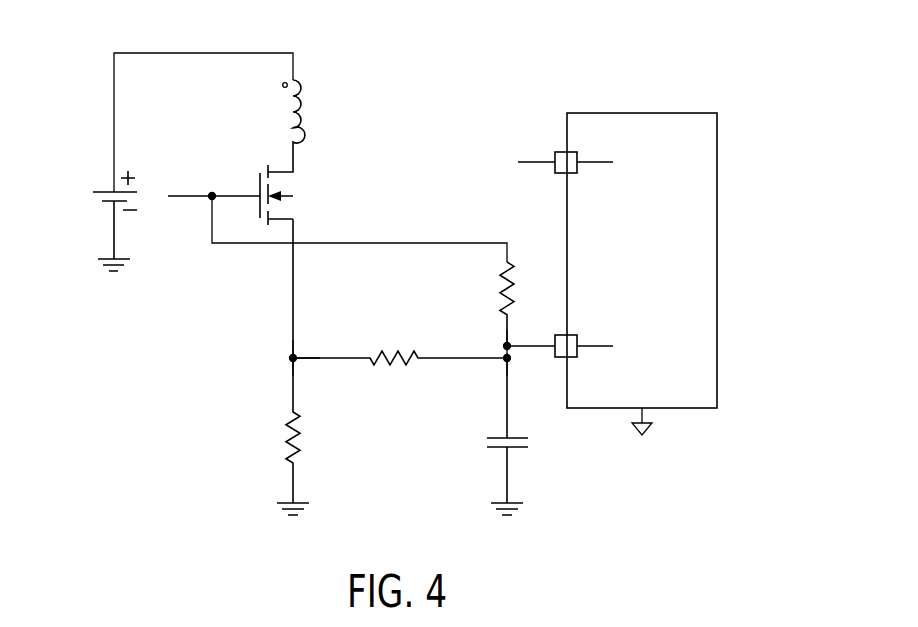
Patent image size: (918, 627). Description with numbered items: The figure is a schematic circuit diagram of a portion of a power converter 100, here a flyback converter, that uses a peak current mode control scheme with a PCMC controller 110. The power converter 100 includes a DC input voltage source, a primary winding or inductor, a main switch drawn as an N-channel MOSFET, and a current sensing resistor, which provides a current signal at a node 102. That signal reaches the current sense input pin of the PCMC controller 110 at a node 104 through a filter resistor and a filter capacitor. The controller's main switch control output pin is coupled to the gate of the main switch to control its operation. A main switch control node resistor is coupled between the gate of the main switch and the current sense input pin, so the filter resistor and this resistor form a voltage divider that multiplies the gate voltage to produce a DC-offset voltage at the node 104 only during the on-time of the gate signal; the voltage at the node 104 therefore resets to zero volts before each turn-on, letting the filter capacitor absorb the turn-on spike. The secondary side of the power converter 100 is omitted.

The power converter 100 is at (724, 30).
The node 102 is at (290, 358).
The node 104 is at (504, 346).
The PCMC controller 110 is at (717, 183).